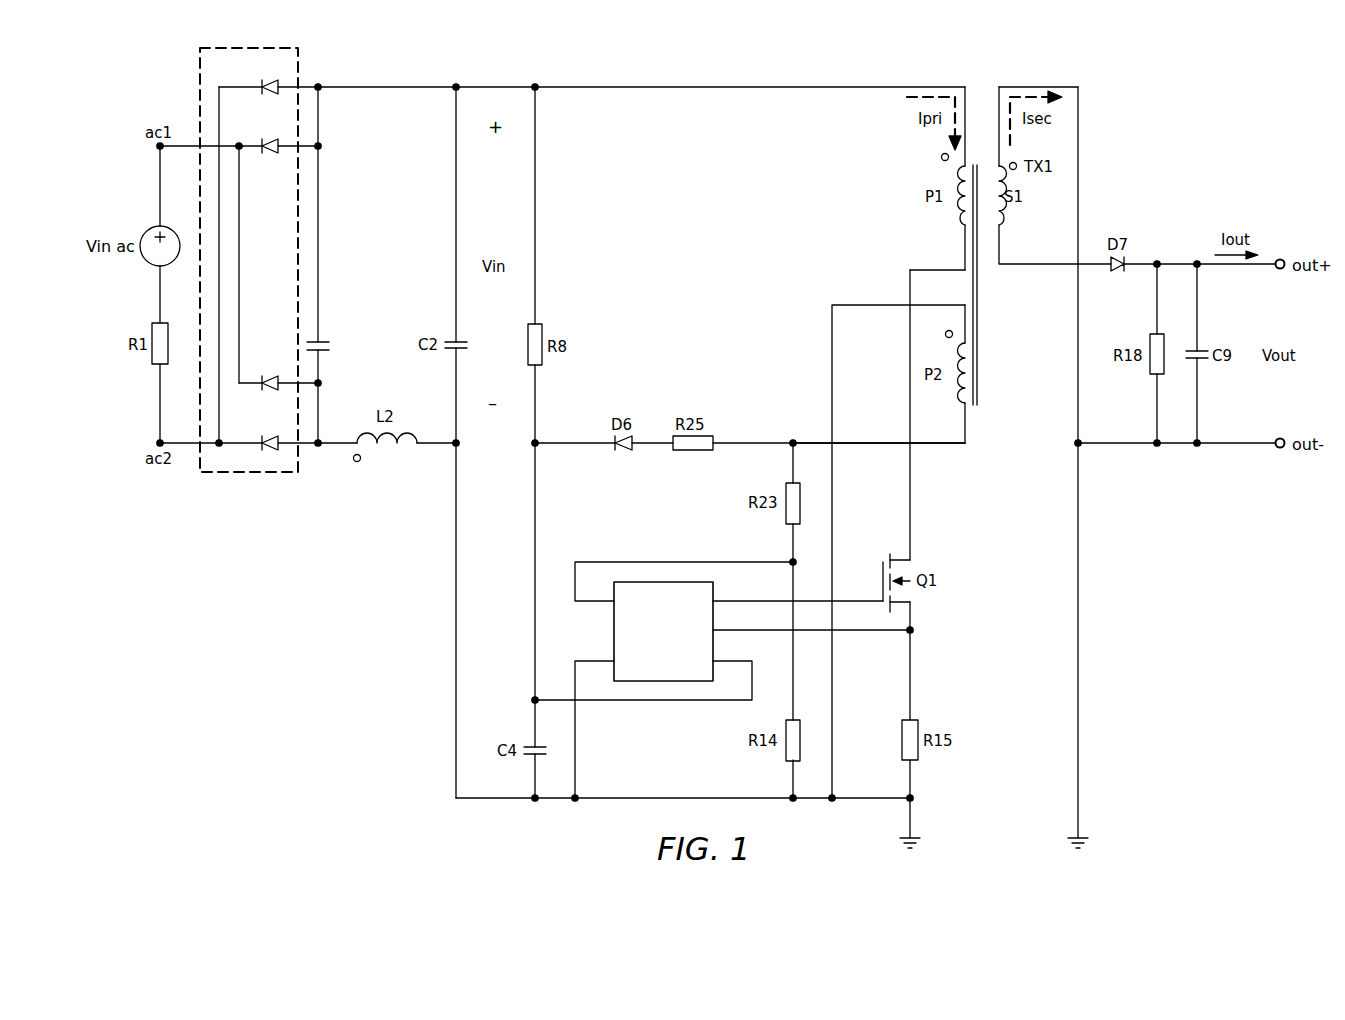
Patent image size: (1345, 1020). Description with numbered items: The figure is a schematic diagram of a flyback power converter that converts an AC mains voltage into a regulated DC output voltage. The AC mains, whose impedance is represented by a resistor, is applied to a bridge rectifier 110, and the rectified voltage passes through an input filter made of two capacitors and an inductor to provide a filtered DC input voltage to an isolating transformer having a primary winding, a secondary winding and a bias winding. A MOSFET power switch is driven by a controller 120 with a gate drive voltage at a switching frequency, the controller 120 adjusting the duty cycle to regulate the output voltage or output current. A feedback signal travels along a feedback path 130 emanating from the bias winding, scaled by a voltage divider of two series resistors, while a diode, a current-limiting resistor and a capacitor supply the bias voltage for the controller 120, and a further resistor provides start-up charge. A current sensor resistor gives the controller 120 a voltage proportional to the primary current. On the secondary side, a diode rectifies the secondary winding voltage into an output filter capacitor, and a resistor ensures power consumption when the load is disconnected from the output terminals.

The bridge rectifier 110 is at (200, 95).
The controller 120 is at (614, 630).
The feedback path 130 is at (869, 443).